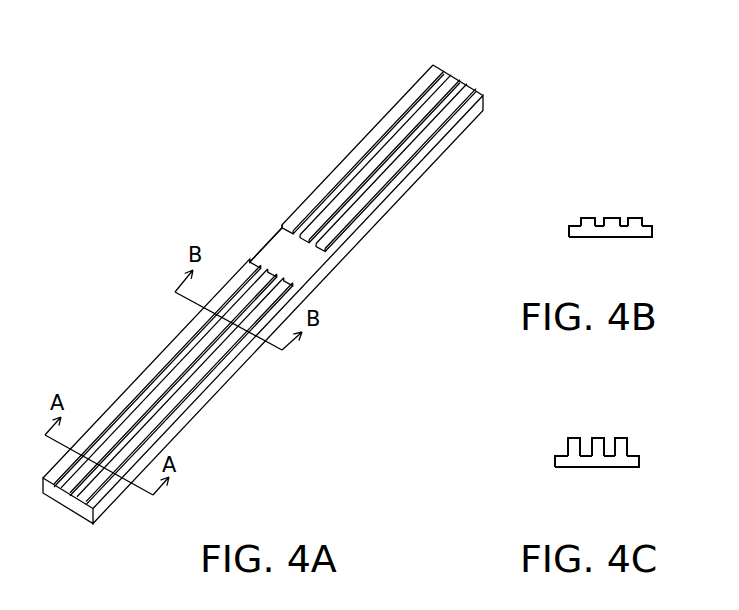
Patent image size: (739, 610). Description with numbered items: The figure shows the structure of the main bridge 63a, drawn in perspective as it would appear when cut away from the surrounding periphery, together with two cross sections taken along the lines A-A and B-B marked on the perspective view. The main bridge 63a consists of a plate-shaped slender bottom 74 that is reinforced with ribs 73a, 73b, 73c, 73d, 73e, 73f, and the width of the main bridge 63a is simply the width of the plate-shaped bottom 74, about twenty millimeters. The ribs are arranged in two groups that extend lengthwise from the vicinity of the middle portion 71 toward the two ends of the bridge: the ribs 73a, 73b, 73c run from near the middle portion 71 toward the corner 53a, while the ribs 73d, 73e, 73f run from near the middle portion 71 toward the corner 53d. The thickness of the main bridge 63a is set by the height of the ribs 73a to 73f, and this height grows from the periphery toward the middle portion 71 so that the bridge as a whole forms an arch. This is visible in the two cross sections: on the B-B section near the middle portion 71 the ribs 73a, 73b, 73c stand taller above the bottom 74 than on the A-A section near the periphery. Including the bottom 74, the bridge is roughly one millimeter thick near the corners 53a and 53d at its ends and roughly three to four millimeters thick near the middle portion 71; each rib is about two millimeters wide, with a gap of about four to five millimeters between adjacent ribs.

In FIG. 4A, the corner 53a is at (56, 510).
In FIG. 4A, the corner 53d is at (468, 74).
In FIG. 4A, the main bridge 63a is at (220, 181).
In FIG. 4A, the middle portion 71 is at (284, 246).
In FIG. 4A, the rib 73a is at (112, 415).
In FIG. 4B, the rib 73a is at (581, 220).
In FIG. 4C, the rib 73a is at (570, 440).
In FIG. 4A, the rib 73b is at (147, 405).
In FIG. 4B, the rib 73b is at (608, 217).
In FIG. 4C, the rib 73b is at (598, 437).
In FIG. 4A, the rib 73c is at (185, 385).
In FIG. 4B, the rib 73c is at (634, 217).
In FIG. 4C, the rib 73c is at (622, 437).
In FIG. 4A, the rib 73d is at (383, 128).
In FIG. 4A, the rib 73e is at (418, 118).
In FIG. 4A, the rib 73f is at (458, 102).
In FIG. 4A, the plate-shaped bottom 74 is at (68, 504).
In FIG. 4B, the plate-shaped bottom 74 is at (578, 232).
In FIG. 4C, the plate-shaped bottom 74 is at (572, 462).